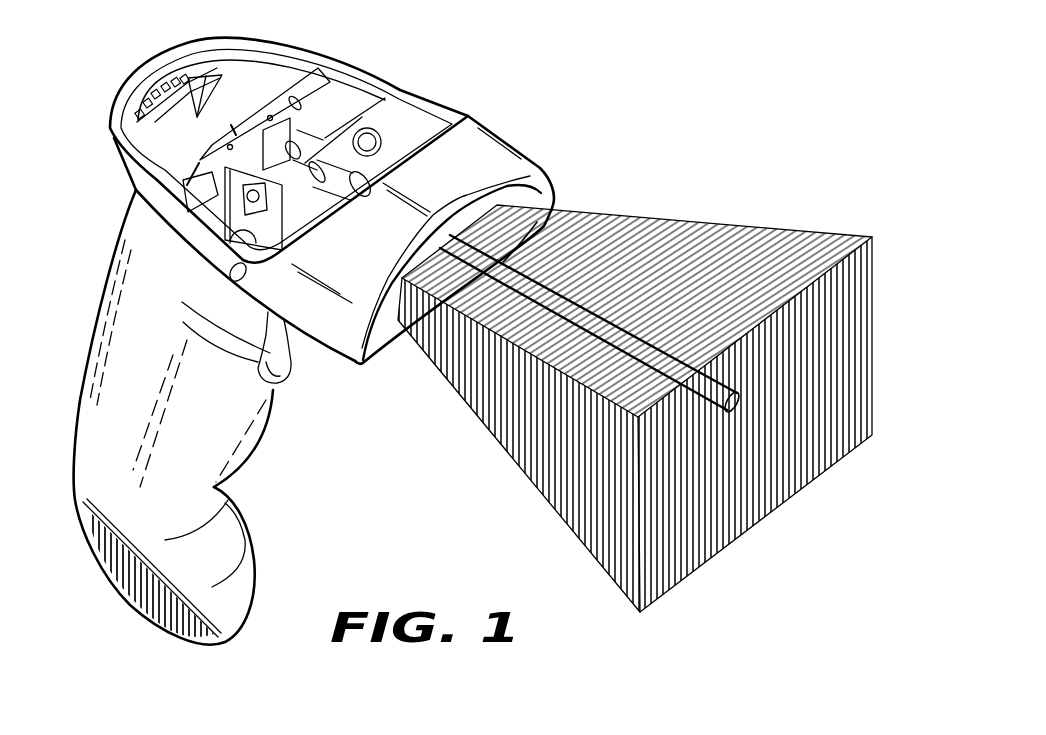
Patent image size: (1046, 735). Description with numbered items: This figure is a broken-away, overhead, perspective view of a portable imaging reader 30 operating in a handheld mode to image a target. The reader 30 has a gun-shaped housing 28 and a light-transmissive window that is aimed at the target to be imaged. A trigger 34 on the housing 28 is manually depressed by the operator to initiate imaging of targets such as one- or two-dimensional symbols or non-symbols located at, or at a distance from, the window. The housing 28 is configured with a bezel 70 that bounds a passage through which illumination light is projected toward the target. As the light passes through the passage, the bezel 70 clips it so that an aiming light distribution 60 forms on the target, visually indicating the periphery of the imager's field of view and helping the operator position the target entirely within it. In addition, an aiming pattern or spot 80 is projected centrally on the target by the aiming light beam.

The portable handheld imaging reader 30 is at (292, 341).
The gun-shaped housing 28 is at (86, 388).
The trigger 34 is at (315, 363).
The bezel 70 is at (377, 158).
The aiming light distribution 60 is at (738, 252).
The aiming pattern or spot 80 is at (737, 412).